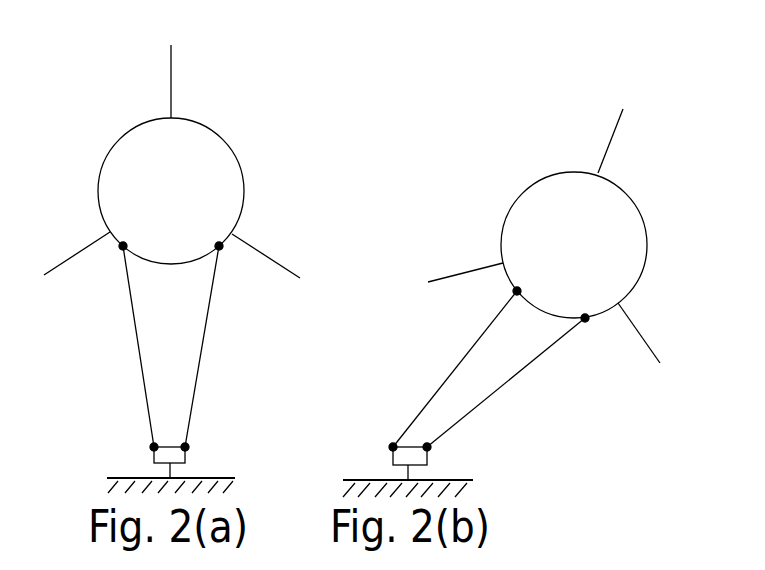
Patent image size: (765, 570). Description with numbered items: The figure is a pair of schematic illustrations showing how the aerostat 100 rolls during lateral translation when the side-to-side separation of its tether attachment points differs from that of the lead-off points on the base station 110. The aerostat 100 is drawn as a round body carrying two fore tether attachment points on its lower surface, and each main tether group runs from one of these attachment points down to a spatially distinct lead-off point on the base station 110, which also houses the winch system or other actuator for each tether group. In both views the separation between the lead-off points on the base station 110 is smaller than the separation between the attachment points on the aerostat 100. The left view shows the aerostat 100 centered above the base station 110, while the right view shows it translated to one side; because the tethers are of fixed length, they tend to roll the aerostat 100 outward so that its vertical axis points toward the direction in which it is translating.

In FIG. 2A, the aerostat 100 is at (195, 155).
In FIG. 2B, the aerostat 100 is at (544, 236).
In FIG. 2B, the base station 110 is at (493, 499).